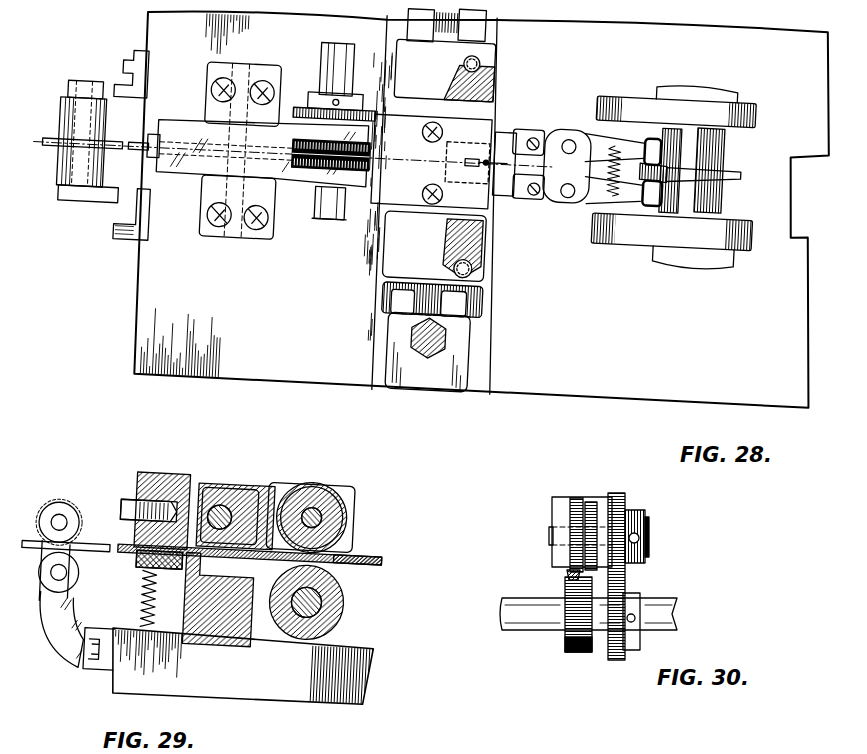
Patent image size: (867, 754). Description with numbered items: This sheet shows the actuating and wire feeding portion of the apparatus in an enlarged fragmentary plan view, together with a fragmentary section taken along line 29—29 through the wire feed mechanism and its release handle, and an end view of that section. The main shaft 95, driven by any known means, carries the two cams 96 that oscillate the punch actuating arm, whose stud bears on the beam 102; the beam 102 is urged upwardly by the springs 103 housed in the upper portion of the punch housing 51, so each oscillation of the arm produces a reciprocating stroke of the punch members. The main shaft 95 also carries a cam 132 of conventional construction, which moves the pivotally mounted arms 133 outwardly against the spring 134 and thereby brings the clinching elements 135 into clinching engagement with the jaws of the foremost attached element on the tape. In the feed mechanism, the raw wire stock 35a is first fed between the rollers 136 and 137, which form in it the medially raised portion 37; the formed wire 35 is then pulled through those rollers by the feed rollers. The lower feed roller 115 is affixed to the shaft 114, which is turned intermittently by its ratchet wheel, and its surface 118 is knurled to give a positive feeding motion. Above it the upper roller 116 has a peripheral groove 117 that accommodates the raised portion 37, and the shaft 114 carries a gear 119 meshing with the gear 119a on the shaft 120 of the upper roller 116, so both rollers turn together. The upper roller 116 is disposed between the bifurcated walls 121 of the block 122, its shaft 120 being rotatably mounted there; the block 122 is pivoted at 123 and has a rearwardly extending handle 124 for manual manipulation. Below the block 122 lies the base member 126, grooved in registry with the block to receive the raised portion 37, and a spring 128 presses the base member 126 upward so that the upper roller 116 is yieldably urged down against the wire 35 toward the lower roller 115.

In FIG. 28, the section line 29 is at (64, 233).
In FIG. 29, the wire stock 35 is at (381, 549).
In FIG. 30, the wire stock 35 is at (566, 574).
In FIG. 28, the raw wire stock 35a is at (56, 231).
In FIG. 29, the raw wire stock 35a is at (35, 539).
In FIG. 28, the medially raised portion 37 is at (140, 154).
In FIG. 29, the medially raised portion 37 is at (356, 545).
In FIG. 28, the punch housing 51 is at (495, 252).
In FIG. 28, the main shaft 95 is at (728, 120).
In FIG. 28, the cams 96 is at (661, 71).
In FIG. 28, the beam 102 is at (462, 238).
In FIG. 28, the springs 103 is at (468, 253).
In FIG. 28, the shaft 114 is at (322, 208).
In FIG. 29, the shaft 114 is at (318, 592).
In FIG. 30, the shaft 114 is at (650, 598).
In FIG. 29, the feed roller 115 is at (339, 608).
In FIG. 30, the feed roller 115 is at (565, 647).
In FIG. 28, the upper roller 116 is at (320, 169).
In FIG. 29, the upper roller 116 is at (326, 491).
In FIG. 30, the upper roller 116 is at (578, 498).
In FIG. 29, the peripheral groove 117 is at (308, 474).
In FIG. 30, the peripheral groove 117 is at (591, 502).
In FIG. 30, the knurled surface 118 is at (580, 655).
In FIG. 30, the gear 119 is at (615, 661).
In FIG. 28, the gear 119a is at (299, 95).
In FIG. 30, the gear 119a is at (625, 495).
In FIG. 29, the shaft 120 is at (316, 507).
In FIG. 30, the shaft 120 is at (649, 538).
In FIG. 28, the bifurcated walls 121 is at (361, 179).
In FIG. 28, the block 122 is at (191, 178).
In FIG. 29, the block 122 is at (192, 479).
In FIG. 28, the pivot 123 is at (240, 234).
In FIG. 29, the pivot 123 is at (225, 484).
In FIG. 28, the handle 124 is at (156, 134).
In FIG. 29, the handle 124 is at (116, 505).
In FIG. 29, the base member 126 is at (134, 567).
In FIG. 29, the spring 128 is at (137, 606).
In FIG. 28, the cam 132 is at (738, 151).
In FIG. 28, the arms 133 is at (555, 112).
In FIG. 28, the spring 134 is at (616, 124).
In FIG. 28, the clinching elements 135 is at (514, 114).
In FIG. 28, the roller 136 is at (116, 99).
In FIG. 29, the roller 136 is at (55, 505).
In FIG. 29, the roller 137 is at (35, 584).